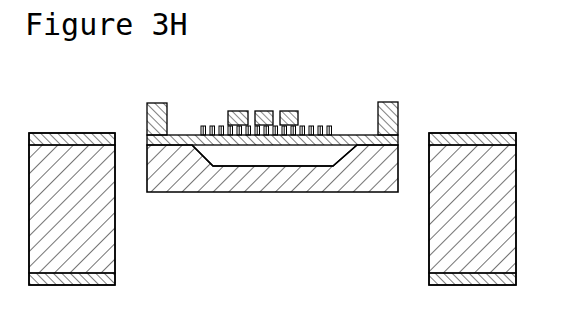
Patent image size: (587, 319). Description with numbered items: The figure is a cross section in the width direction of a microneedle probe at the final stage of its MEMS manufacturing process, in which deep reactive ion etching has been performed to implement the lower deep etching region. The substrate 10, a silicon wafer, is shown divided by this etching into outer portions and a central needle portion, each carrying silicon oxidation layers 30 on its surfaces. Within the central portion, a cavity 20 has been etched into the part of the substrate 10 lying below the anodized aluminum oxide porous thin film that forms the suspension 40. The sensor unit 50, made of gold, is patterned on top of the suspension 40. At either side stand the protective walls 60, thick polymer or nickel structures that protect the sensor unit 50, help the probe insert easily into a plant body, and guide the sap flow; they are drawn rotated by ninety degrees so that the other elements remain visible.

The substrate 10 is at (508, 220).
The cavity 20 is at (228, 157).
The silicon oxidation layer 30 is at (517, 137).
The suspension 40 is at (306, 125).
The sensor unit 50 is at (265, 111).
The protective wall 60 is at (388, 102).